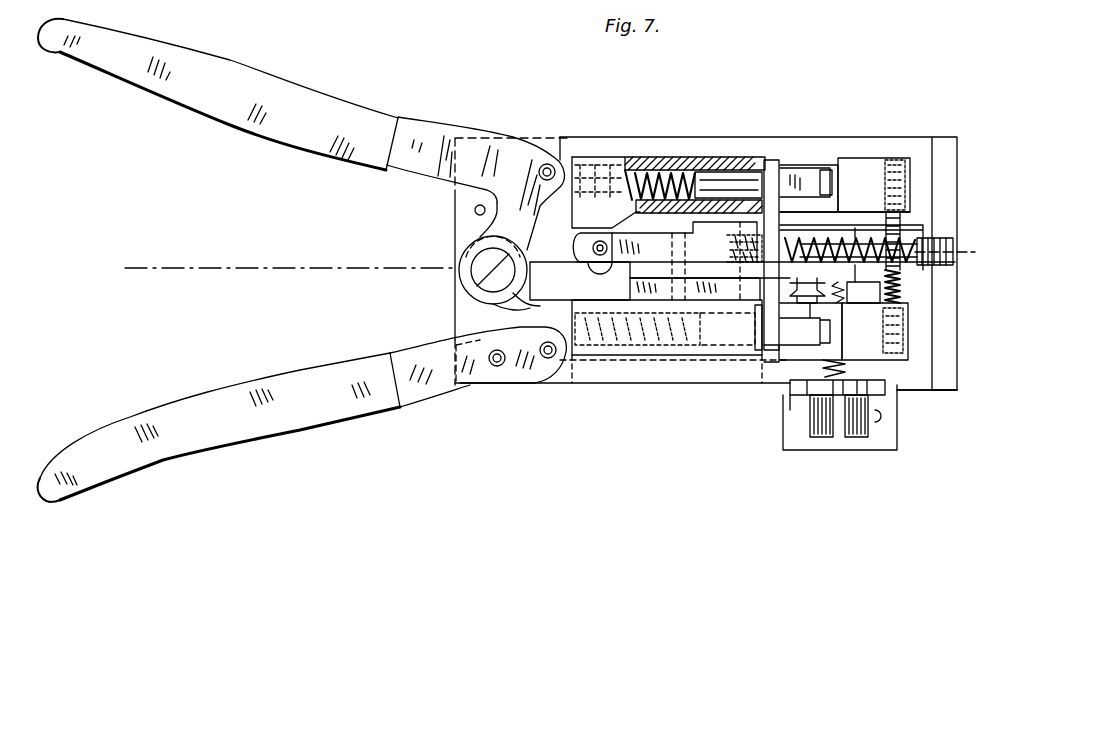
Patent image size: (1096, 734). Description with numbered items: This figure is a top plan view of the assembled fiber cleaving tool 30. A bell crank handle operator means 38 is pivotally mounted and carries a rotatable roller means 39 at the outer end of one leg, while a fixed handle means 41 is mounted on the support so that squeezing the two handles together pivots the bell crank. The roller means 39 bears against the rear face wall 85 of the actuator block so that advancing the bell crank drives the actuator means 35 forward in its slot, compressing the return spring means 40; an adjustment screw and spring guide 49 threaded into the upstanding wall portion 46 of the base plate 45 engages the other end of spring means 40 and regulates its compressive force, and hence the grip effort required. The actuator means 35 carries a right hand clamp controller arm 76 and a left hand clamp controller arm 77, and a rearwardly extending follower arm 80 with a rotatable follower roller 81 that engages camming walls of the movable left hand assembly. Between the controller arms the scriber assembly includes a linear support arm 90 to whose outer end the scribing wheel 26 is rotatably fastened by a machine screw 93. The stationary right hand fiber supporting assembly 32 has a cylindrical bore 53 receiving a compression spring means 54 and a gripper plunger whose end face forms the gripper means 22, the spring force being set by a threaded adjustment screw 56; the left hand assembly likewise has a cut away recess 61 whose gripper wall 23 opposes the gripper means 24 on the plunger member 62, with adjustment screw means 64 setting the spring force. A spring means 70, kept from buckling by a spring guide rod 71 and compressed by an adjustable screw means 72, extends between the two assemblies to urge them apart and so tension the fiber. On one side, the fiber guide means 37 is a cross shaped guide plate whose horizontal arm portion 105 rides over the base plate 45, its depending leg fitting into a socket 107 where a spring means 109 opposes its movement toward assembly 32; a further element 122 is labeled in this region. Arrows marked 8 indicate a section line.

The section line 8- 8 is at (132, 253).
The gripper means 22 is at (828, 340).
The gripper wall 23 is at (838, 168).
The gripper means 24 is at (832, 186).
The scriber wheel 26 is at (820, 306).
The tool means 30 is at (424, 231).
The right hand fiber supporting assembly 32 is at (623, 321).
The actuator means 35 is at (622, 314).
The fiber guide means 37 is at (777, 408).
The bell crank handle operator means 38 is at (375, 89).
The roller means 39 is at (452, 293).
The return spring means 40 is at (762, 254).
The fixed handle means 41 is at (340, 440).
The base plate 45 is at (527, 386).
The upstanding wall portion 46 is at (940, 392).
The adjustment screw and spring guide 49 is at (924, 228).
The cylindrical bore 53 is at (682, 175).
The compression spring means 54 is at (648, 170).
The threaded adjustment screw 56 is at (576, 322).
The cut away recess 61 is at (795, 175).
The plunger member 62 is at (738, 175).
The adjustment screw means 64 is at (588, 160).
The spring means 70 is at (880, 264).
The spring guide rod 71 is at (898, 282).
The adjustable screw means 72 is at (899, 158).
The right hand clamp controller arm 76 is at (766, 352).
The left hand clamp controller arm 77 is at (772, 170).
The follower arm 80 is at (636, 250).
The follower roller 81 is at (592, 270).
The rear face wall 85 is at (527, 304).
The linear support arm 90 is at (760, 300).
The machine screw 93 is at (811, 331).
The horizontally disposed arm portion 105 is at (788, 386).
The socket 107 is at (873, 428).
The spring means 109 is at (802, 420).
The left insert 122 is at (818, 440).